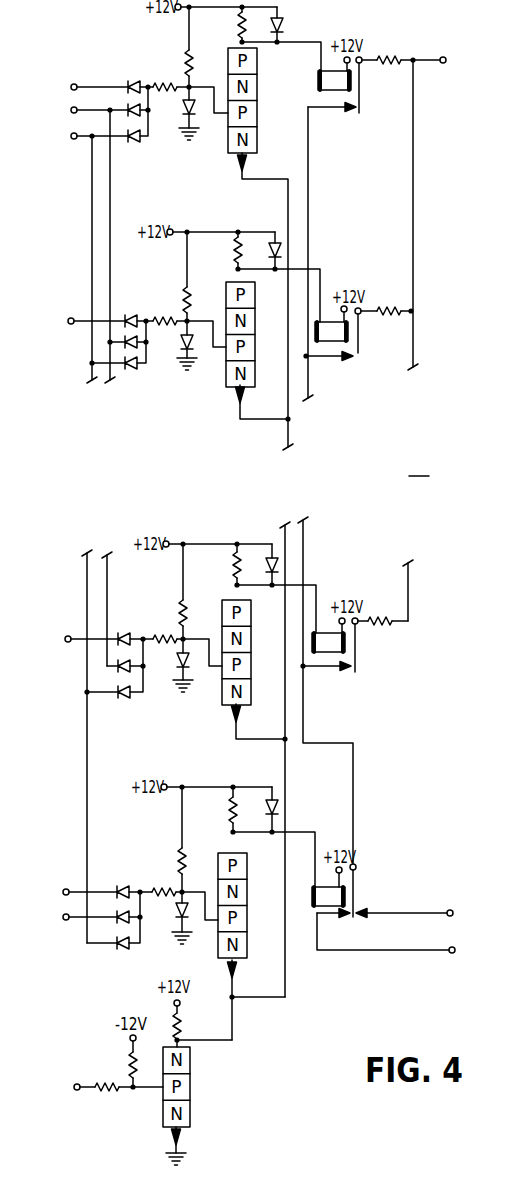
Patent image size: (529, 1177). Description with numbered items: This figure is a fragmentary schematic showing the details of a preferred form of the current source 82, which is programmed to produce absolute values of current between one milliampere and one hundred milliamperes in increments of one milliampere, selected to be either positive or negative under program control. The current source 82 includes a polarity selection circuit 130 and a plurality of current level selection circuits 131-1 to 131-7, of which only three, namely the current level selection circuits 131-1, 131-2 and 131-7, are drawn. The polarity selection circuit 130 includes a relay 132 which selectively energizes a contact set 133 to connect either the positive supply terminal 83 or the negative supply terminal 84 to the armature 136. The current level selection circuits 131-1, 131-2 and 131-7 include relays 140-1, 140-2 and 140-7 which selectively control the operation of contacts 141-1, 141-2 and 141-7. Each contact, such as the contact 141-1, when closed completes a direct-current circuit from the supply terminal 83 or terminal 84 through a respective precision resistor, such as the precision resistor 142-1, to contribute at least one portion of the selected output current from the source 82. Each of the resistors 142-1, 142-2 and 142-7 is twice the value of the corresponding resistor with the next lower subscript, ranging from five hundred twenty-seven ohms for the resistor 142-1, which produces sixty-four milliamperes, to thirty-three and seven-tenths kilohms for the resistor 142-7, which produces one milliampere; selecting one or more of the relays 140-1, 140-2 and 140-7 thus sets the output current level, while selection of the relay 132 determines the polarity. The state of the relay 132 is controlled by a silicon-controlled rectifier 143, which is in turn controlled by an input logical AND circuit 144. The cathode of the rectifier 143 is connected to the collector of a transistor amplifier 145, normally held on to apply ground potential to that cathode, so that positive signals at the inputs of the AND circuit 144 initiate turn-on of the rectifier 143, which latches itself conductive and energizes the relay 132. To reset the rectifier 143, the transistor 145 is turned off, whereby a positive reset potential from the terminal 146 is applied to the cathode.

The current level selection circuit 131-1 is at (128, 56).
The relay 140-1 is at (318, 82).
The contact 141-1 is at (359, 113).
The precision resistor 142-1 is at (383, 58).
The current level selection circuit 131-2 is at (77, 293).
The relay 140-2 is at (326, 322).
The contact 141-2 is at (355, 363).
The precision resistor 142-2 is at (370, 302).
The current source 82 is at (419, 466).
The current level selection circuit 131-7 is at (72, 622).
The relay 140-7 is at (323, 633).
The contact 141-7 is at (352, 670).
The precision resistor 142-7 is at (382, 630).
The polarity selection circuit 130 is at (64, 875).
The logical AND circuit 144 is at (126, 875).
The silicon-controlled rectifier 143 is at (248, 939).
The terminal 146 is at (181, 1005).
The transistor amplifier 145 is at (204, 1084).
The armature 136 is at (356, 882).
The contact set 133 is at (368, 902).
The relay 132 is at (311, 904).
The negative supply terminal 84 is at (450, 910).
The positive supply terminal 83 is at (452, 953).